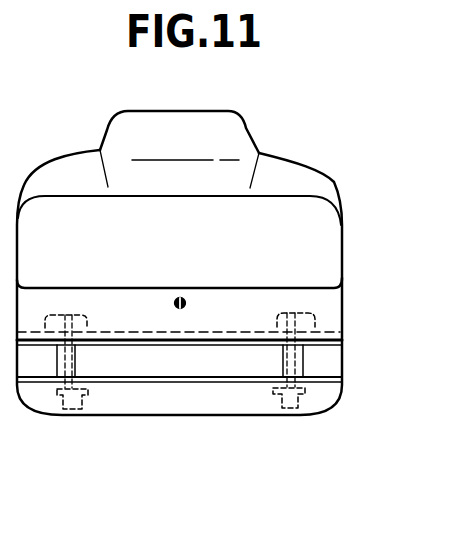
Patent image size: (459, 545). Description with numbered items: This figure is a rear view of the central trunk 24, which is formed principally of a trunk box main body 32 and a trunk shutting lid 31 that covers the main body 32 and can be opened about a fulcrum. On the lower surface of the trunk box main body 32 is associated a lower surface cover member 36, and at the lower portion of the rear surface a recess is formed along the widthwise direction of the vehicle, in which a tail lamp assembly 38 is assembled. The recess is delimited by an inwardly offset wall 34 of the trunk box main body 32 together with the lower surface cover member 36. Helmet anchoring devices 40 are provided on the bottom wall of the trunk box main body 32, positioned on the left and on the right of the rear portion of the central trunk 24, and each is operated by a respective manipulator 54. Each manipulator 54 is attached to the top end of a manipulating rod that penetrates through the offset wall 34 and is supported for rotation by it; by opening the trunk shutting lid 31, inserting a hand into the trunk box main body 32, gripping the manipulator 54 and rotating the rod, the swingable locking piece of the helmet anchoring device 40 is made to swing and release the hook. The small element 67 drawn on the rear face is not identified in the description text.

The central trunk 24 is at (289, 144).
The trunk shutting lid 31 is at (332, 238).
The trunk box main body 32 is at (333, 312).
The inwardly offset wall 34 is at (240, 330).
The lower surface cover member 36 is at (240, 393).
The tail lamp assembly 38 is at (197, 367).
The helmet anchoring device 40 is at (68, 413).
The manipulator 54 is at (66, 330).
The knob 67 is at (180, 297).